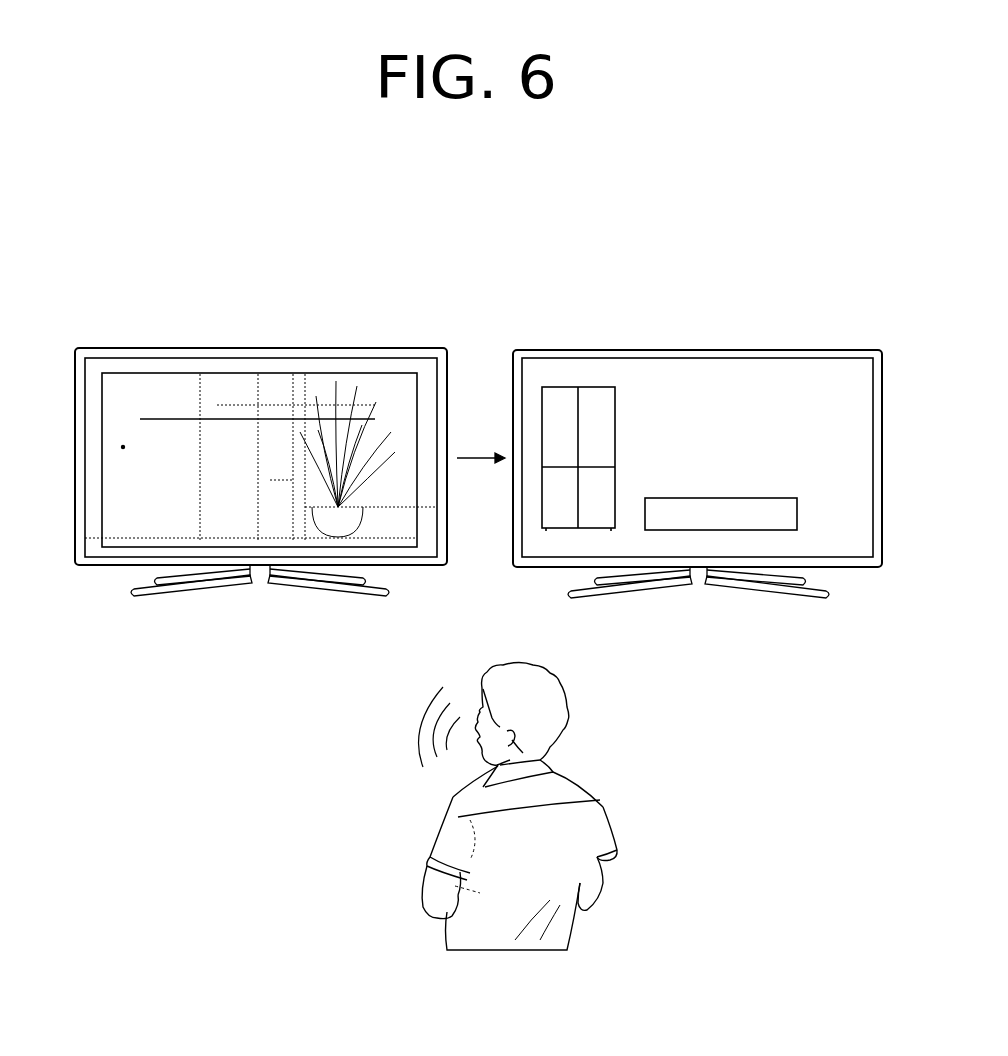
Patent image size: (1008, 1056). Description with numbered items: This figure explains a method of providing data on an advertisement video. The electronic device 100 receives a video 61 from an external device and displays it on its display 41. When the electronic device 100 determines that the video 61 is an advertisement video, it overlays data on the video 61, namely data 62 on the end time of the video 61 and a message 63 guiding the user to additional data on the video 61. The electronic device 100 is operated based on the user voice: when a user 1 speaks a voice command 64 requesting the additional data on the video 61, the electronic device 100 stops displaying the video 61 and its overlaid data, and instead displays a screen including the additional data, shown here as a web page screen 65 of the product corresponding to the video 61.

The electronic device 100 is at (120, 350).
The display 41 is at (185, 515).
The video 61 is at (285, 367).
The data on an end time of the video 62 is at (142, 421).
The message for guiding additional data on the video 63 is at (120, 448).
The web page screen of a product 65 is at (733, 372).
The voice command 64 is at (315, 743).
The user 1 is at (603, 808).